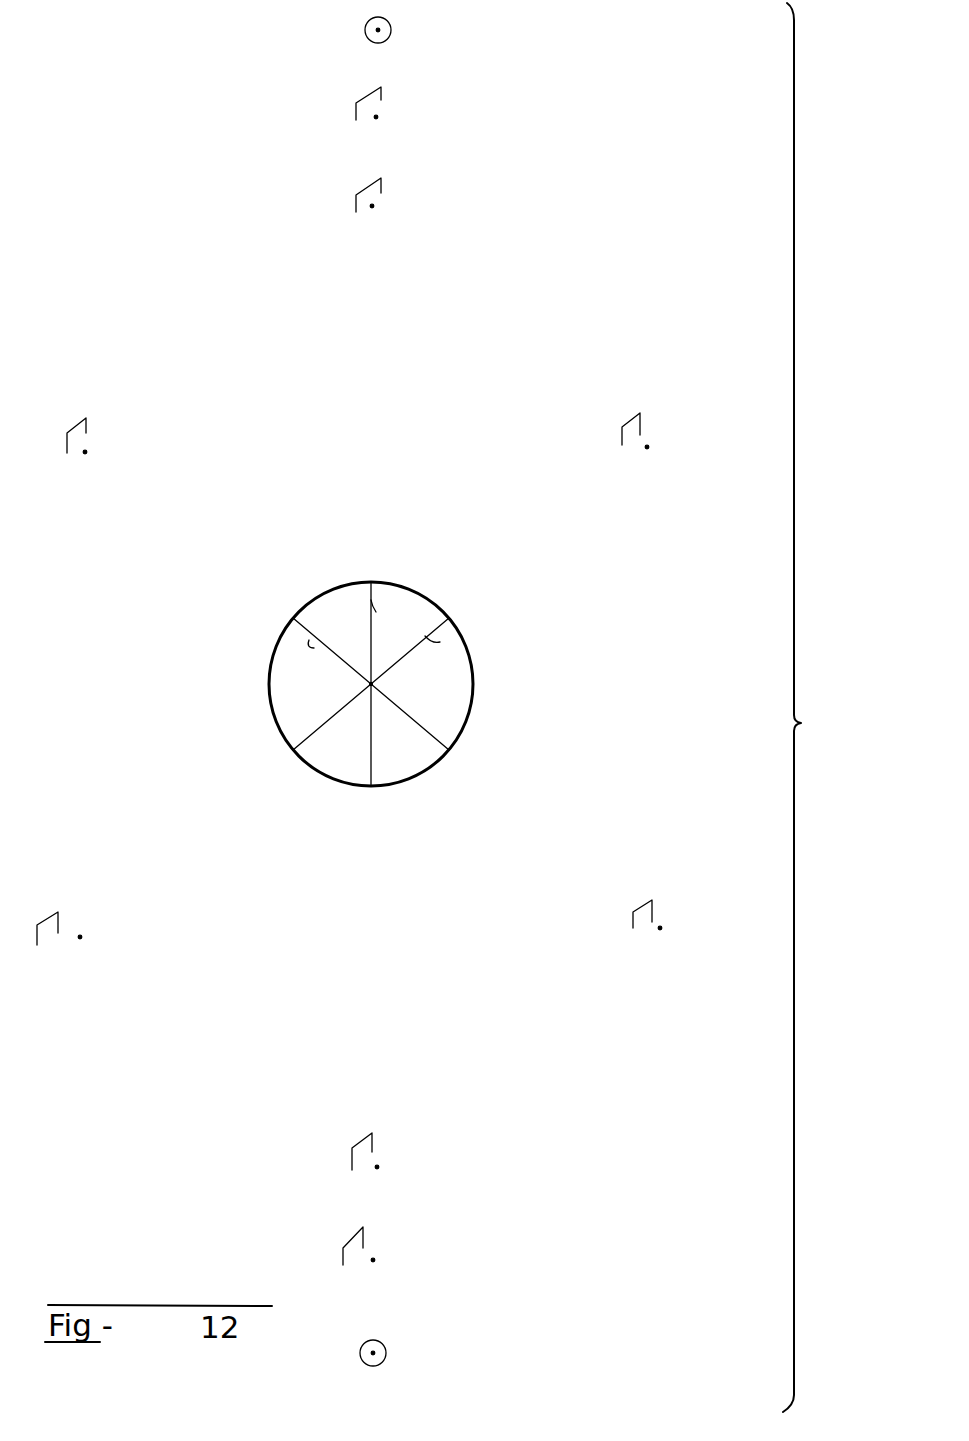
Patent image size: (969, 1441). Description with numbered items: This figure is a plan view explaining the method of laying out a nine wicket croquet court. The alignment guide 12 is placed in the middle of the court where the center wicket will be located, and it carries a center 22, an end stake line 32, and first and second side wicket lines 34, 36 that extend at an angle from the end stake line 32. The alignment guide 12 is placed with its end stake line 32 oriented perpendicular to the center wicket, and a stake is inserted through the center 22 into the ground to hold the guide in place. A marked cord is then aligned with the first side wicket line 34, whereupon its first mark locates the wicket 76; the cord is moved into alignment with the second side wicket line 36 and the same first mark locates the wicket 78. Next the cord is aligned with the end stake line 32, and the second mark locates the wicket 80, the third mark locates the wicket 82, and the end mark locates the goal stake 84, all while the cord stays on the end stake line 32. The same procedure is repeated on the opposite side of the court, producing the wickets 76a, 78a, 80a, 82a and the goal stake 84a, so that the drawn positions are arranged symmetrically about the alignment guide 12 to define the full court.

The alignment guide 12 is at (412, 777).
The center 22 is at (375, 684).
The end stake line 32 is at (373, 610).
The first side wicket line 34 is at (430, 640).
The second side wicket line 36 is at (313, 642).
The wicket 76 is at (648, 448).
The wicket 78 is at (87, 453).
The wicket 80 is at (374, 207).
The wicket 82 is at (378, 118).
The goal stake 84 is at (391, 31).
The wicket 76a is at (82, 937).
The wicket 78a is at (661, 929).
The wicket 80a is at (379, 1167).
The wicket 82a is at (375, 1260).
The goal stake 84a is at (386, 1353).